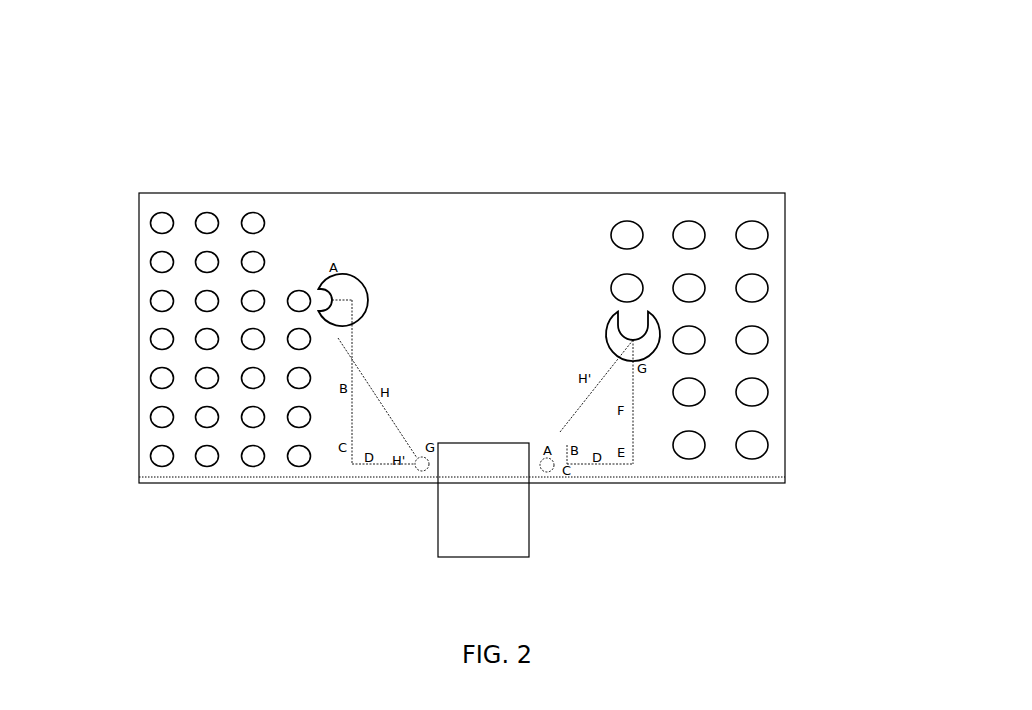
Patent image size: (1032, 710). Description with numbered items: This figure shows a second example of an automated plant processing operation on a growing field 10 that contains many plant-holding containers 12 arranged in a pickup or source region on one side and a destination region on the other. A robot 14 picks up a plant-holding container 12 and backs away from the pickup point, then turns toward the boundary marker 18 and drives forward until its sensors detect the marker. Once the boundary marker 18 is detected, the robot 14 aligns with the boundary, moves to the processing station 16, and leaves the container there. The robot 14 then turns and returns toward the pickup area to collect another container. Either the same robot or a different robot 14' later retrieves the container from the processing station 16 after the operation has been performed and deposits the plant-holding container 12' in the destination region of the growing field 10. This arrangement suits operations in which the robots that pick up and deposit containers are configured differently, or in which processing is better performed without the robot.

The growing field 10 is at (470, 210).
The plant-holding container 12 is at (177, 340).
The plant-holding container 12' is at (763, 340).
The robot 14 is at (367, 233).
The robot 14' is at (589, 236).
The processing station 16 is at (497, 535).
The boundary marker 18 is at (243, 482).